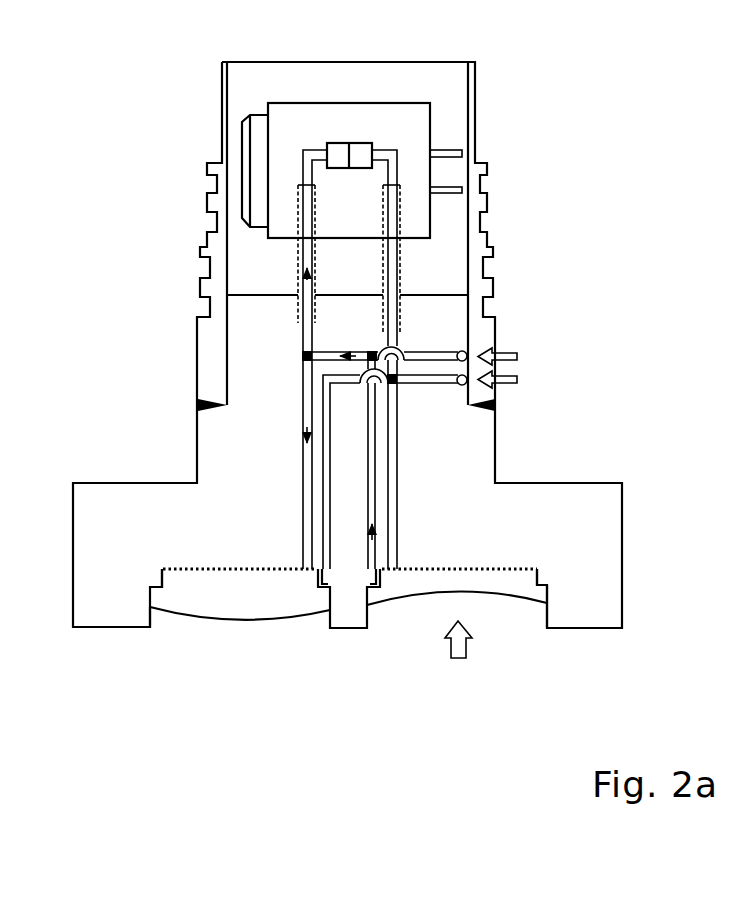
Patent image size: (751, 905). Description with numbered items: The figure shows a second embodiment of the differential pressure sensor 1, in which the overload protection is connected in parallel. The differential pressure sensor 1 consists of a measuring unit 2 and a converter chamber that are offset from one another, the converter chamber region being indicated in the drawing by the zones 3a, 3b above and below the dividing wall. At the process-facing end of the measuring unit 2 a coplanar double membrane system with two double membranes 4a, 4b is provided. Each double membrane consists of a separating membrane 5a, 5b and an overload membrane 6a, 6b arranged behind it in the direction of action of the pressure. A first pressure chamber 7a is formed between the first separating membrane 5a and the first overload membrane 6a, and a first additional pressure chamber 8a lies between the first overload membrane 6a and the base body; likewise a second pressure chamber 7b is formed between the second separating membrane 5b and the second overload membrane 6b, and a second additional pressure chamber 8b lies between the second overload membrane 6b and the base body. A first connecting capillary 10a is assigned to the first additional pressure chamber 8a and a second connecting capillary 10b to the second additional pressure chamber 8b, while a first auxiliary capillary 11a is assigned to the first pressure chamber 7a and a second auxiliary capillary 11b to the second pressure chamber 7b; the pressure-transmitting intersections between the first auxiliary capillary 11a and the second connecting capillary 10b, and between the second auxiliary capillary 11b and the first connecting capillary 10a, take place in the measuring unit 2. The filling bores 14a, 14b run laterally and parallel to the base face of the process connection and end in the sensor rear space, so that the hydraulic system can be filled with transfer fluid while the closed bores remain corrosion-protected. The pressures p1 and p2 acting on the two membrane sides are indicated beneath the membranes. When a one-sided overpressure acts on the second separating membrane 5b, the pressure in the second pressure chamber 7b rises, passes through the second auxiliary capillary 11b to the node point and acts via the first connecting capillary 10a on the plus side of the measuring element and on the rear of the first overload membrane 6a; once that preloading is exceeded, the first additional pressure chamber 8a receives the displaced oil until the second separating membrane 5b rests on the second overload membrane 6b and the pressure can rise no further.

The differential pressure sensor 1 is at (349, 557).
The measuring unit 2 is at (347, 320).
The third zone upper part (electronics compartment) 3a is at (347, 199).
The third zone lower part (housing interior) 3b is at (346, 437).
The first double membrane 4a is at (181, 646).
The second double membrane 4b is at (358, 604).
The first separating membrane 5a is at (222, 624).
The second separating membrane 5b is at (444, 600).
The first overload membrane 6a is at (203, 564).
The second overload membrane 6b is at (452, 563).
The first pressure chamber 7a is at (182, 604).
The second pressure chamber 7b is at (521, 588).
The first additional pressure chamber 8a is at (178, 564).
The second additional pressure chamber 8b is at (509, 564).
The first connecting capillary 10a is at (305, 545).
The second connecting capillary 10b is at (395, 445).
The first auxiliary capillary 11a is at (327, 512).
The second auxiliary capillary 11b is at (376, 468).
The first filling bore 14a is at (426, 345).
The second filling bore 14b is at (426, 387).
The first pressure p1 is at (461, 630).
The second pressure p2 is at (302, 677).